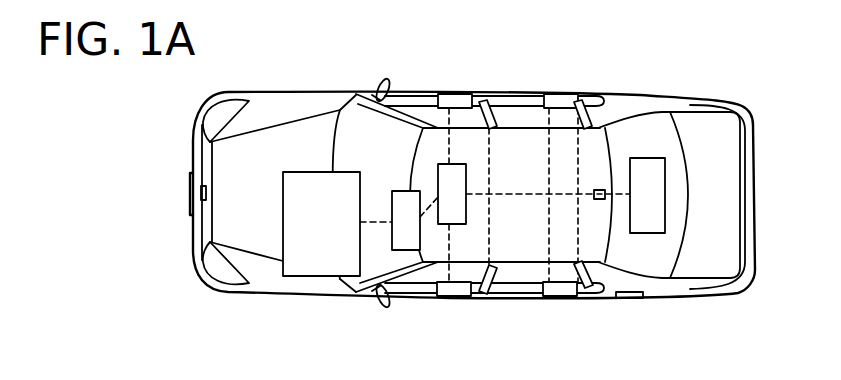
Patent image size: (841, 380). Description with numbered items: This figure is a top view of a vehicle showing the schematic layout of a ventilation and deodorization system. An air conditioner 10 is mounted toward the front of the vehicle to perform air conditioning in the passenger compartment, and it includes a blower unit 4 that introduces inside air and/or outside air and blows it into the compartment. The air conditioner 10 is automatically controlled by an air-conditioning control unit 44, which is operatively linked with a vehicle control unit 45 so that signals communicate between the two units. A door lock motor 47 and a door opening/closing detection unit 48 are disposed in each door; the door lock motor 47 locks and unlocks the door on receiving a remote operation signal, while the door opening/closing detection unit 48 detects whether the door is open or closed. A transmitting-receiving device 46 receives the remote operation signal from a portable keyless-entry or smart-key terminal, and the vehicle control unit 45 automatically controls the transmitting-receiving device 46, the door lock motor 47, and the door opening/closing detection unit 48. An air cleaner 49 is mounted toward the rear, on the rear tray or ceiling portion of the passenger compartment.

The air conditioner 10 is at (313, 206).
The blower unit 4 is at (313, 261).
The air-conditioning control unit 44 is at (397, 235).
The vehicle control unit 45 is at (443, 208).
The transmitting-receiving device 46 is at (603, 190).
The door lock motor 47 is at (455, 94).
The door opening/closing detection unit 48 is at (491, 100).
The air cleaner 49 is at (638, 209).